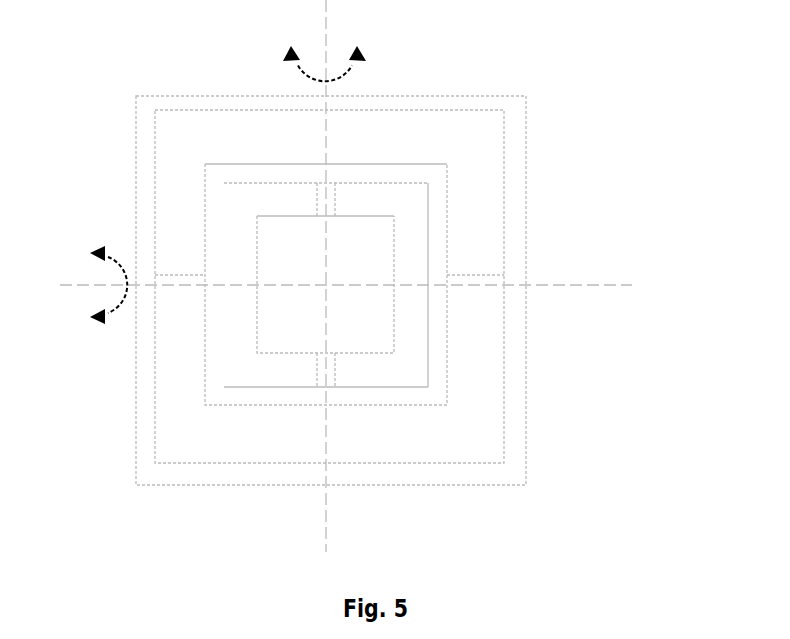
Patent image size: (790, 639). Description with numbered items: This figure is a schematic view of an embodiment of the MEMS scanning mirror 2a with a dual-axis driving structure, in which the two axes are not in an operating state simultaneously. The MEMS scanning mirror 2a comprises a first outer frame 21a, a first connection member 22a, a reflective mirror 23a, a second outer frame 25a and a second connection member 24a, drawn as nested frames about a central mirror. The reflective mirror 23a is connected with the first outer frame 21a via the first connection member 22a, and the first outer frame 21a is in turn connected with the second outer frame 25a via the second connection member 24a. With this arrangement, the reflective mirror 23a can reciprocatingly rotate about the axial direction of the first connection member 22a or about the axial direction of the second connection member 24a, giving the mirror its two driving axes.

The MEMS scanning mirror 2a is at (463, 88).
The first outer frame 21a is at (433, 329).
The first connection member 22a is at (330, 373).
The reflective mirror 23a is at (372, 336).
The second connection member 24a is at (482, 285).
The second outer frame 25a is at (520, 237).